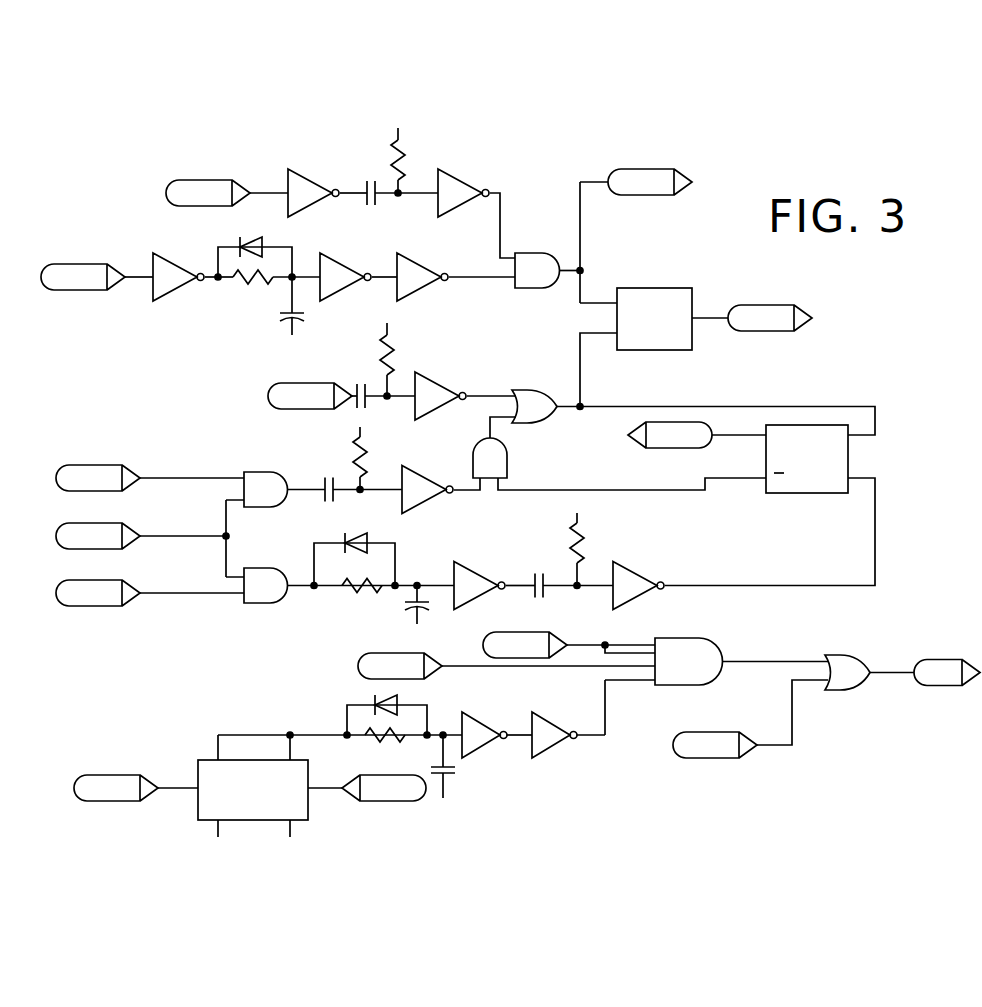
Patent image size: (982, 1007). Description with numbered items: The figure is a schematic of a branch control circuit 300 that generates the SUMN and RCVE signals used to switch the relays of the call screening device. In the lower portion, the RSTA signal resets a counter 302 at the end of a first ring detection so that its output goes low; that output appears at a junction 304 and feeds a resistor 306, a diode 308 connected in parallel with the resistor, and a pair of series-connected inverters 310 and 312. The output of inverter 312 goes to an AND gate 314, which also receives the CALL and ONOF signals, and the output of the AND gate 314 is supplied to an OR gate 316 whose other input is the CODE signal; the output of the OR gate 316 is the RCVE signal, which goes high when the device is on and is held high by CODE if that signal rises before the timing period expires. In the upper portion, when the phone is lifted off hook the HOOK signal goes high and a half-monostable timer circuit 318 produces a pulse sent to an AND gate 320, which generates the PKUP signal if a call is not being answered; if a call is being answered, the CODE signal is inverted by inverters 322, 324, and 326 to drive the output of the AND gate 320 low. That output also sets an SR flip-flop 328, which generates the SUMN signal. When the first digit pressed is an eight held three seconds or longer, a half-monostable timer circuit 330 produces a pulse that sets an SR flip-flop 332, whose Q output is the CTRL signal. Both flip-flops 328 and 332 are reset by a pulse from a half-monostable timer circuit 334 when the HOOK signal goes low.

The branch control circuit 300 is at (905, 390).
The counter 302 is at (198, 771).
The junction 304 is at (291, 733).
The resistor 306 is at (389, 745).
The diode 308 is at (402, 704).
The inverter 310 is at (481, 748).
The inverter 312 is at (564, 710).
The AND gate 314 is at (718, 645).
The OR gate 316 is at (855, 658).
The half-monostable timer circuit 318 is at (427, 165).
The AND gate 320 is at (538, 253).
The inverter 322 is at (176, 300).
The inverter 324 is at (343, 300).
The inverter 326 is at (424, 295).
The SR flip-flop 328 is at (645, 288).
The half-monostable timer circuit 330 is at (373, 608).
The SR flip-flop 332 is at (848, 460).
The half-monostable timer circuit 334 is at (434, 366).